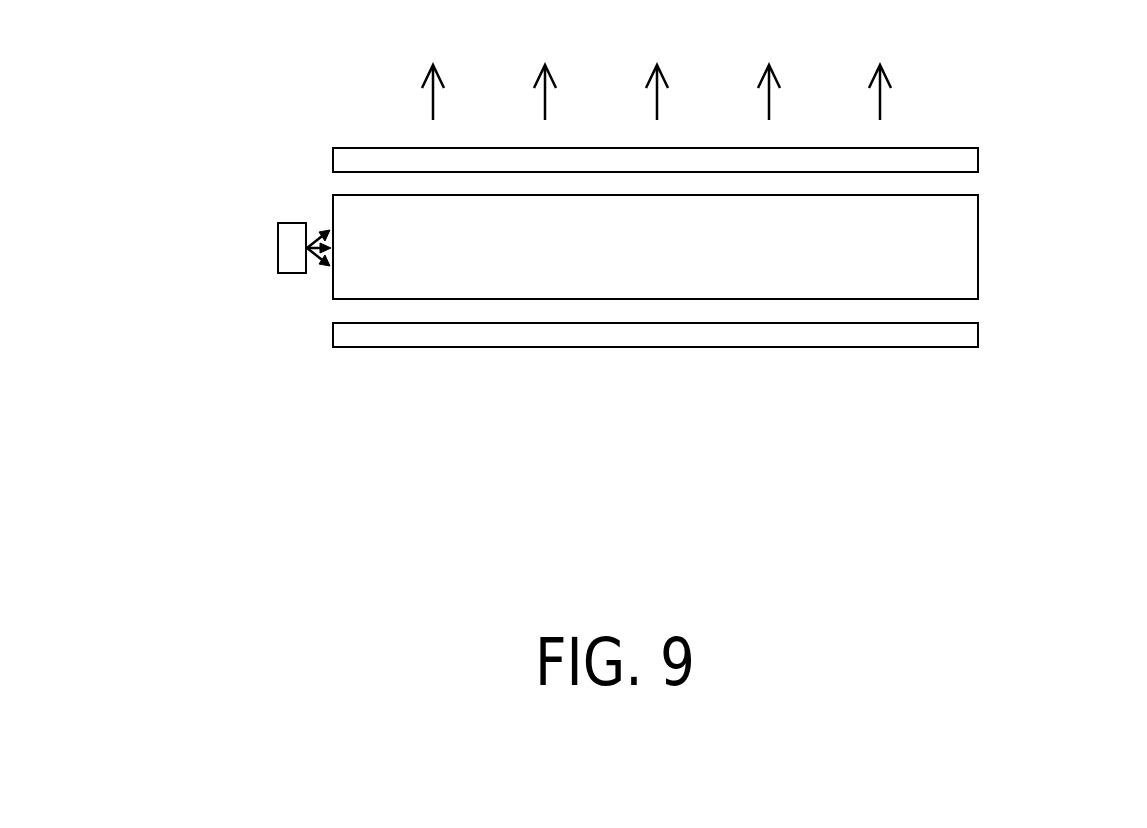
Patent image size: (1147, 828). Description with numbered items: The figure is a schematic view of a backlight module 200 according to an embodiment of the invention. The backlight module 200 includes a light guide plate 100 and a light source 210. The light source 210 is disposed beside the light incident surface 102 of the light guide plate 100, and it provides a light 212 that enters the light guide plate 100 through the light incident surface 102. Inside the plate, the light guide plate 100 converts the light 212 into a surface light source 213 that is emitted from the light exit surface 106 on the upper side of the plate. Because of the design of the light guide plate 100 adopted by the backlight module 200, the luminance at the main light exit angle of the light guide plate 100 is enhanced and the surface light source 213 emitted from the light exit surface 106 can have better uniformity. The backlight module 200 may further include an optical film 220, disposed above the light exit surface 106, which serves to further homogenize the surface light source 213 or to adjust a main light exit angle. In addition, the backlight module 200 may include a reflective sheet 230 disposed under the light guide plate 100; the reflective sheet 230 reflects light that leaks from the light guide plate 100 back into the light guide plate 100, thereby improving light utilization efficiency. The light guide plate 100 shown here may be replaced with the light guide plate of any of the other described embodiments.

The backlight module 200 is at (190, 82).
The light guide plate 100 is at (966, 250).
The light incident surface 102 is at (335, 227).
The light exit surface 106 is at (845, 195).
The light source 210 is at (284, 248).
The light 212 is at (318, 262).
The surface light source 213 is at (937, 101).
The optical film 220 is at (966, 160).
The reflective sheet 230 is at (966, 335).